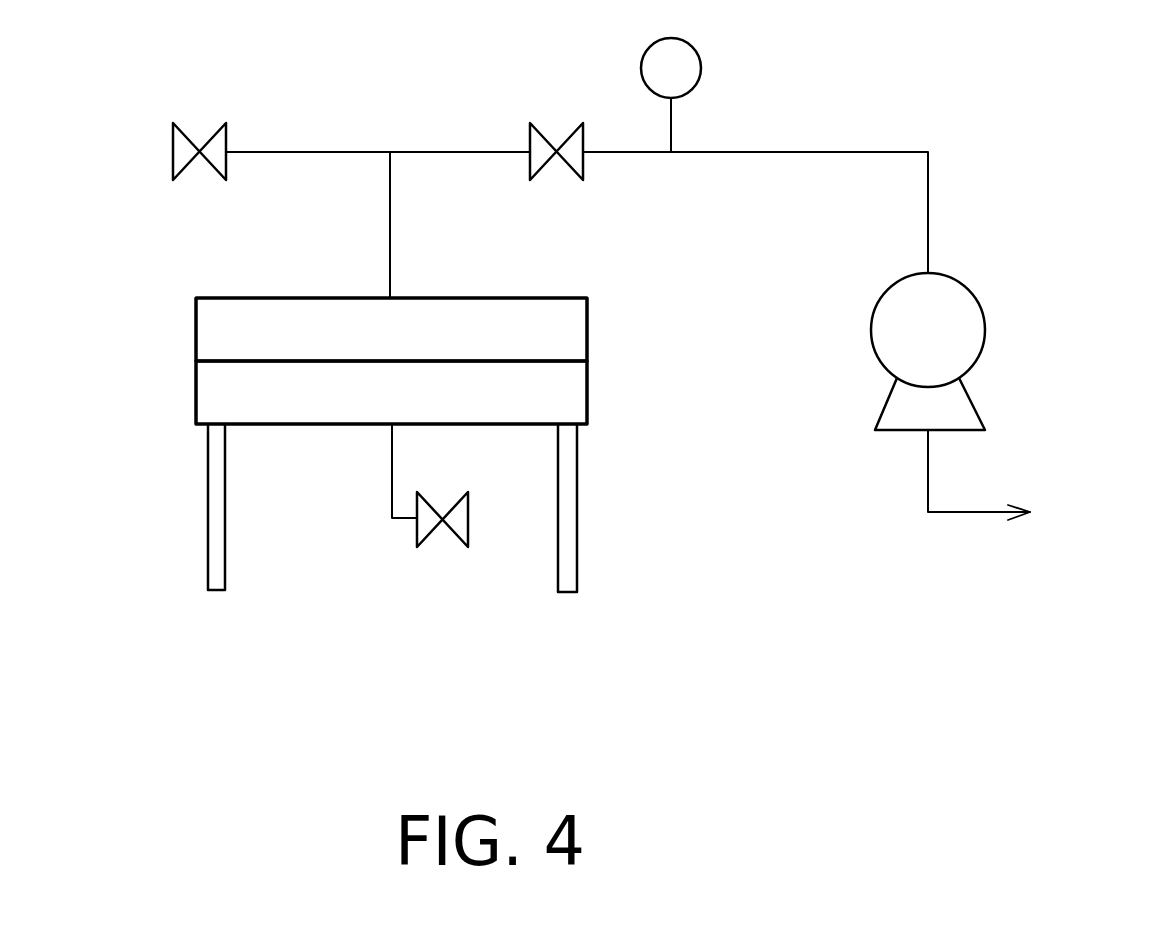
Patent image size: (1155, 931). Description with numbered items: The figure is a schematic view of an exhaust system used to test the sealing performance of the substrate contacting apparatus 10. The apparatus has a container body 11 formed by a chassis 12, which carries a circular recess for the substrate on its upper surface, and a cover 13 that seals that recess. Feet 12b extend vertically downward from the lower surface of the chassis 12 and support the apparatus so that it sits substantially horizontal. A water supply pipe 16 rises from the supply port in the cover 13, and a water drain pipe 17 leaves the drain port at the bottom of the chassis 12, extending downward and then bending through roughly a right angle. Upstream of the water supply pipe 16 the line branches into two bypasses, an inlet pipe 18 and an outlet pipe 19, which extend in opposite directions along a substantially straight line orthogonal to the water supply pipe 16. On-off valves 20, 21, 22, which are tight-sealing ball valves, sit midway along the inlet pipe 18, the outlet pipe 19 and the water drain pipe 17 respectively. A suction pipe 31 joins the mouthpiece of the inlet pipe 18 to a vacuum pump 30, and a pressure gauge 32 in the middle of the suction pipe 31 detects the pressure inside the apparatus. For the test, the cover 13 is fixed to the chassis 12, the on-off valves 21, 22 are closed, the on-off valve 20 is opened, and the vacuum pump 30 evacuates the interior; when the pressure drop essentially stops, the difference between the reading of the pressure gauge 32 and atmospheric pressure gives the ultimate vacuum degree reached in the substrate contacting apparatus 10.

The substrate contacting apparatus 10 is at (182, 337).
The container body 11 is at (657, 303).
The chassis 12 is at (572, 393).
The feet 12b is at (208, 557).
The cover 13 is at (570, 333).
The water supply pipe 16 is at (393, 252).
The water drain pipe 17 is at (392, 465).
The inlet pipe 18 is at (441, 150).
The outlet pipe 19 is at (305, 150).
The on-off valve 20 is at (552, 132).
The on-off valve 21 is at (188, 128).
The on-off valve 22 is at (428, 547).
The vacuum pump 30 is at (985, 320).
The suction pipe 31 is at (888, 152).
The pressure gauge 32 is at (700, 55).